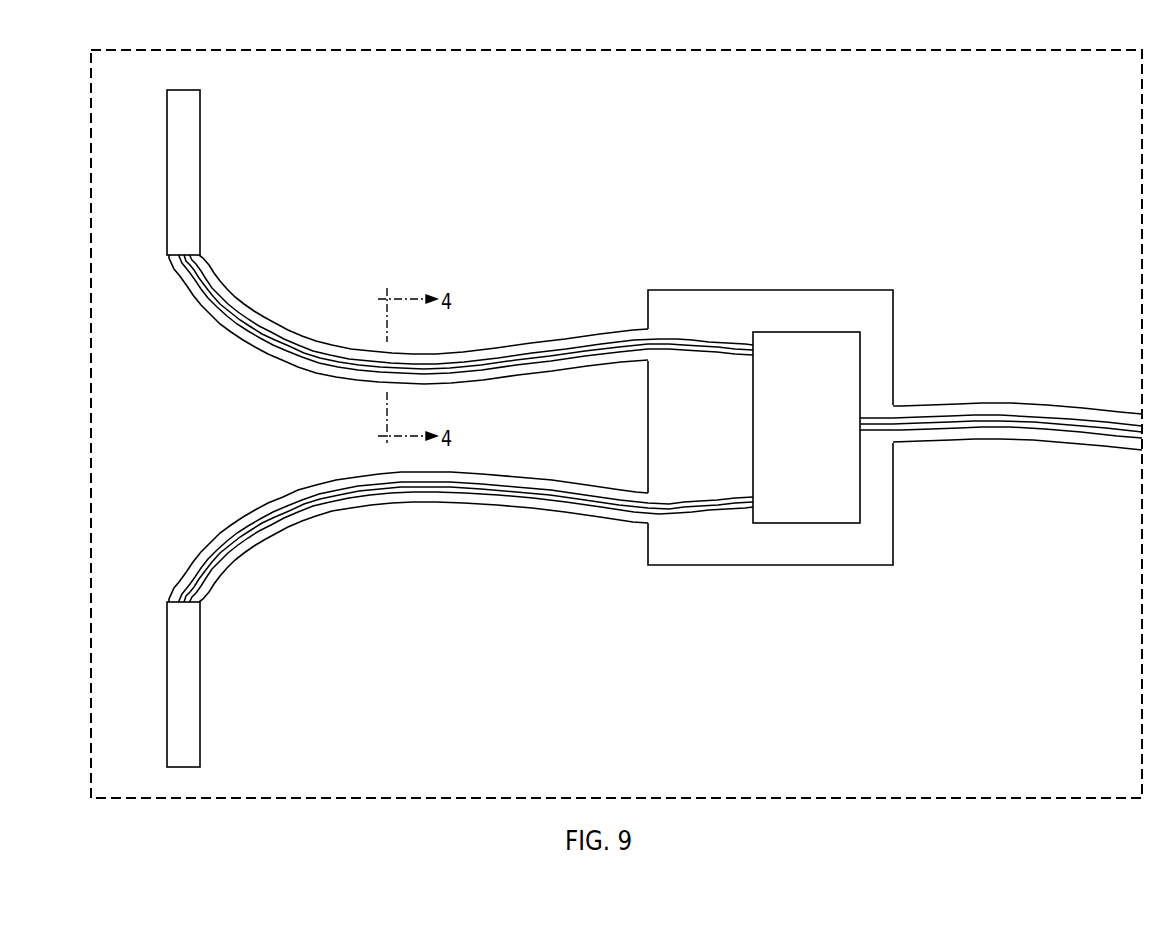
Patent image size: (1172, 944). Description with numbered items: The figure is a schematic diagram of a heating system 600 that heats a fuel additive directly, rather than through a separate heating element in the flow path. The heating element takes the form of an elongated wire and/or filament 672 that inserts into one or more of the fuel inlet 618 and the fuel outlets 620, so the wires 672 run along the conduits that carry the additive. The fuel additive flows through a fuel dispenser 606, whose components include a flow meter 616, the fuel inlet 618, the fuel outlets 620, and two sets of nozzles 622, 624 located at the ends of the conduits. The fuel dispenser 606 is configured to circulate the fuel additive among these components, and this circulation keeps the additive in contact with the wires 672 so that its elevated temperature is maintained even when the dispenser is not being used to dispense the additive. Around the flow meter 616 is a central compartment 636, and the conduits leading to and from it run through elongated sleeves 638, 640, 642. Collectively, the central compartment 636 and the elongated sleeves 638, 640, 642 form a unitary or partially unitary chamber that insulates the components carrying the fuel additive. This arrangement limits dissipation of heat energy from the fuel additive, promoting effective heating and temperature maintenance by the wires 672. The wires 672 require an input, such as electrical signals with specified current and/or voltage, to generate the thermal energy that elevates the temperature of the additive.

The heating system 600 is at (967, 180).
The fuel dispenser 606 is at (616, 424).
The flow meter 616 is at (792, 475).
The fuel inlet 618 is at (874, 437).
The fuel outlets 620 is at (683, 502).
The nozzles 622 is at (224, 180).
The nozzles 624 is at (224, 697).
The central compartment 636 is at (865, 290).
The elongated sleeve 638 is at (1011, 405).
The elongated sleeve 640 is at (560, 337).
The elongated sleeve 642 is at (537, 515).
The wire 672 is at (233, 312).